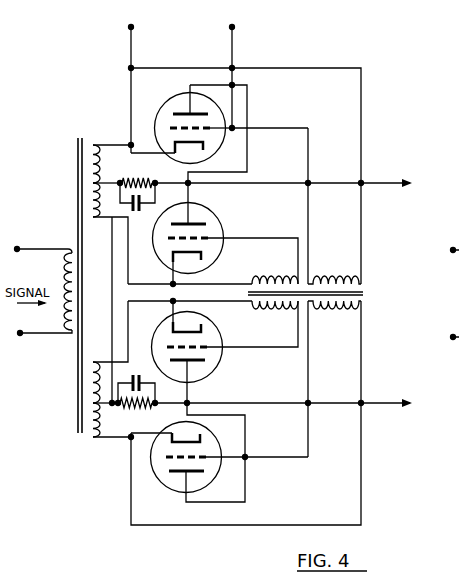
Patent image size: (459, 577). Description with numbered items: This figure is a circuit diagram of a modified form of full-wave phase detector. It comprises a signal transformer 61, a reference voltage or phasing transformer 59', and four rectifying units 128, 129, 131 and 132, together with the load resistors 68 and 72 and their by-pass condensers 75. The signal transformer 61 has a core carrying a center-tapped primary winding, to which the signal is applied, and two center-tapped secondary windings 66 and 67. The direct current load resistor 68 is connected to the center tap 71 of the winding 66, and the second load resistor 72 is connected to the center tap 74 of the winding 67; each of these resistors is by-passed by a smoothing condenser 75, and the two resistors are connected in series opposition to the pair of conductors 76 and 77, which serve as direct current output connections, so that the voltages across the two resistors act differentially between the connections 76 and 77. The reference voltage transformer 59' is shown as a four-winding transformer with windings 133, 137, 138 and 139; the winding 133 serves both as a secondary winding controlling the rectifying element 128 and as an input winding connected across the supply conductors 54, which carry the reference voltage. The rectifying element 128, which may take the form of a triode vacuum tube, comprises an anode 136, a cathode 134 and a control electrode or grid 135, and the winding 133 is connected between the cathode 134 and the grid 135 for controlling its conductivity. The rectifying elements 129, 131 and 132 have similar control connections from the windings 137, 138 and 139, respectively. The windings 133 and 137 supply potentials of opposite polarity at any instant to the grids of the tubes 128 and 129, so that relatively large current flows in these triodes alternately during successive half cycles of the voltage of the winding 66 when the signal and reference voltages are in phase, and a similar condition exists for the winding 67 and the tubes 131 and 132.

The connection 54 is at (187, 57).
The reference voltage transformer 59' is at (324, 292).
The signal voltage transformer 61 is at (72, 207).
The secondary winding 66 is at (112, 144).
The secondary winding 67 is at (106, 362).
The direct current load resistor 68 is at (141, 179).
The center tap 71 is at (92, 182).
The direct current load resistor 72 is at (139, 413).
The center tap 74 is at (91, 403).
The smoothing condenser 75 is at (141, 210).
The output connection 76 is at (413, 179).
The output connection 77 is at (403, 410).
The rectifying element 128 is at (193, 124).
The rectifying element 129 is at (229, 229).
The rectifying element 131 is at (218, 374).
The rectifying element 132 is at (174, 494).
The transformer winding 133 is at (352, 263).
The cathode 134 is at (208, 148).
The control electrode or grid 135 is at (173, 114).
The anode 136 is at (208, 117).
The transformer winding 137 is at (291, 263).
The transformer winding 138 is at (286, 317).
The transformer winding 139 is at (352, 317).